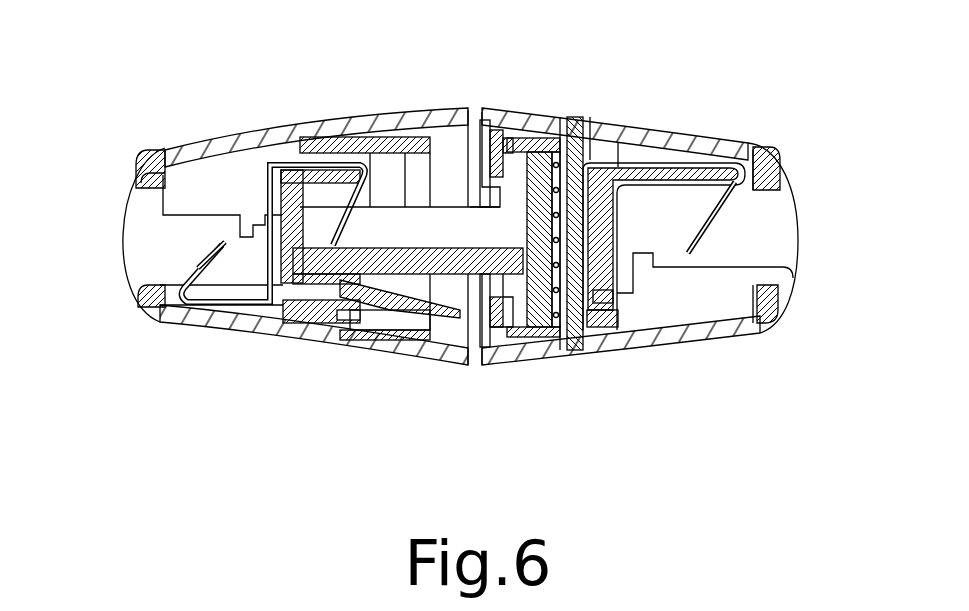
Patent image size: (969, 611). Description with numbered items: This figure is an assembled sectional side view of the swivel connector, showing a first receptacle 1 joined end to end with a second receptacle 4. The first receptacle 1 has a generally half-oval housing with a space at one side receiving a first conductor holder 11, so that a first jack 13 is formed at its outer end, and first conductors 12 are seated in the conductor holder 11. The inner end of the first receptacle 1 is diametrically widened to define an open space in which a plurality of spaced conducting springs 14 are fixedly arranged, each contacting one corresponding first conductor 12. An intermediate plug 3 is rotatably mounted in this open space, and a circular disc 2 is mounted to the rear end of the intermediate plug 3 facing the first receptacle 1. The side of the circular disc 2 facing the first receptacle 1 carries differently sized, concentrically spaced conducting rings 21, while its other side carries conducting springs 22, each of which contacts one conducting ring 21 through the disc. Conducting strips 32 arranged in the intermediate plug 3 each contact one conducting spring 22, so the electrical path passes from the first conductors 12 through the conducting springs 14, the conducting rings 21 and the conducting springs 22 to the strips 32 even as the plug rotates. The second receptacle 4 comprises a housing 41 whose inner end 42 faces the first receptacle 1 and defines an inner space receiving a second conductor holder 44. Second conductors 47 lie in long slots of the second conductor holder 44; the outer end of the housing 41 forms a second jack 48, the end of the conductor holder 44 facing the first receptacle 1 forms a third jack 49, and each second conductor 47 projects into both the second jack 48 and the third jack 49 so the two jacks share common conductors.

The first receptacle 1 is at (684, 350).
The circular disc 2 is at (633, 130).
The intermediate plug 3 is at (548, 340).
The second receptacle 4 is at (294, 375).
The first conductor holder 11 is at (725, 130).
The first conductor 12 is at (760, 237).
The first jack 13 is at (773, 212).
The conducting spring 14 is at (580, 335).
The conducting ring 21 is at (575, 130).
The conducting spring 22 is at (517, 173).
The conducting strip 32 is at (433, 233).
The housing 41 is at (366, 355).
The inner end 42 is at (500, 372).
The second conductor holder 44 is at (292, 165).
The second conductor 47 is at (345, 170).
The second jack 48 is at (163, 247).
The third jack 49 is at (417, 177).